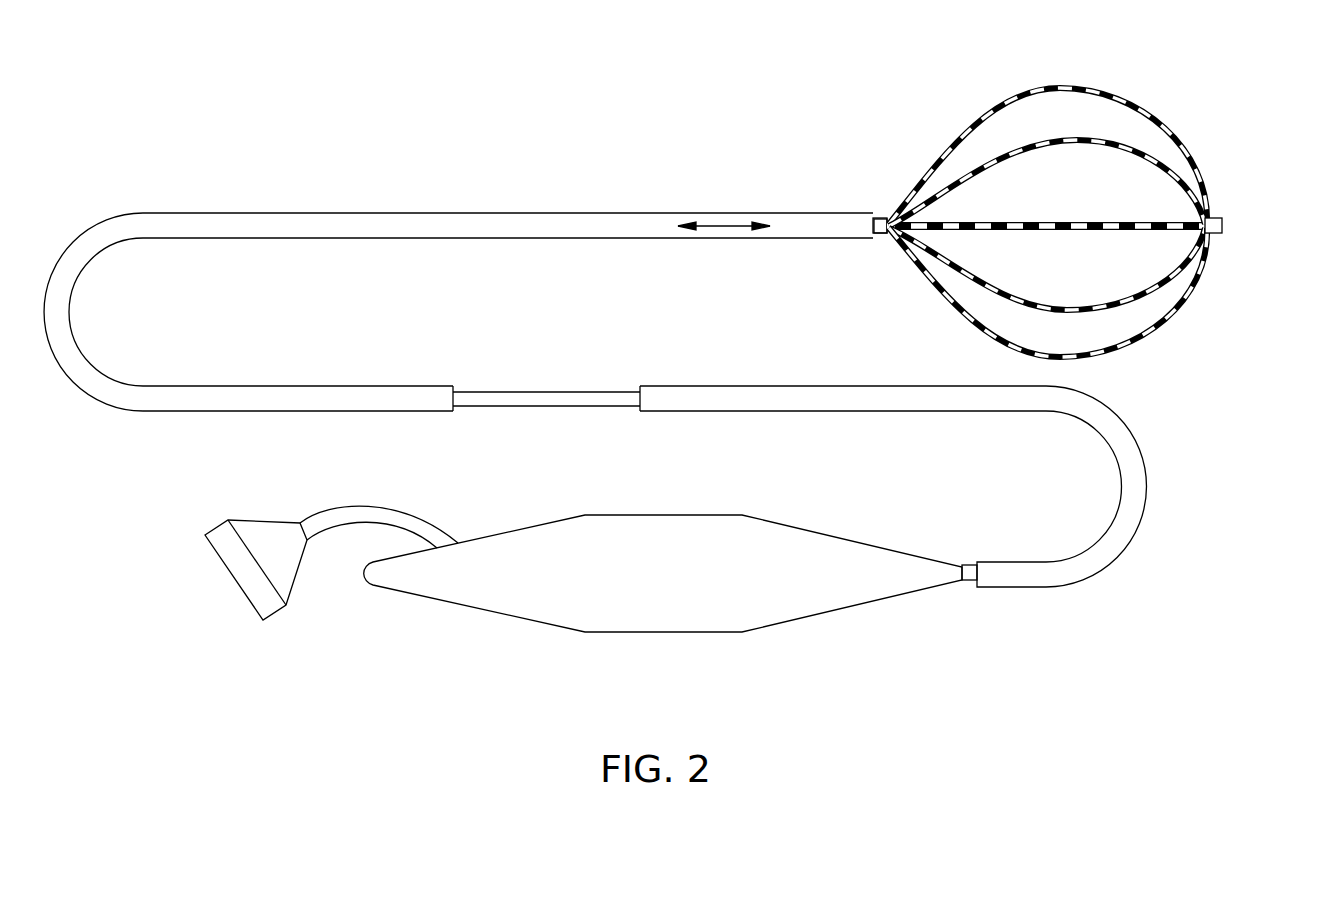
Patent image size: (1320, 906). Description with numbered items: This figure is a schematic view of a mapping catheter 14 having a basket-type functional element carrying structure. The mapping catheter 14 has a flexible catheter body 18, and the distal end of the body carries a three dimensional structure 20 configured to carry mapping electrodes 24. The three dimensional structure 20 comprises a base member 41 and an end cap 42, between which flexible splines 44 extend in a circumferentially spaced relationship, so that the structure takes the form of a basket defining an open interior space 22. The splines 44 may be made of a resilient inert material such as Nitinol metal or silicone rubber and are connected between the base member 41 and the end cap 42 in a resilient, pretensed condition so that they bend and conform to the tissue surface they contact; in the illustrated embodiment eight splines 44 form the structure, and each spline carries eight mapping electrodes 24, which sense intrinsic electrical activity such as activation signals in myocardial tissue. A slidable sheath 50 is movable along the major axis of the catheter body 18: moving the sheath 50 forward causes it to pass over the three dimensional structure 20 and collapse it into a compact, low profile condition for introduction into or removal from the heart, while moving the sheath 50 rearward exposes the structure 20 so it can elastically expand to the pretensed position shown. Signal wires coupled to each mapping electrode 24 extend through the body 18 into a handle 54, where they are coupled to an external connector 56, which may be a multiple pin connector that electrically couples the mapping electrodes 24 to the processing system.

The mapping catheter 14 is at (567, 126).
The flexible catheter body 18 is at (878, 218).
The three dimensional structure 20 is at (1090, 218).
The open interior space 22 is at (1150, 278).
The mapping electrodes 24 is at (1061, 218).
The base member 41 is at (890, 236).
The end cap 42 is at (1225, 226).
The flexible splines 44 is at (968, 122).
The slidable sheath 50 is at (625, 213).
The handle 54 is at (812, 530).
The external connector 56 is at (275, 605).